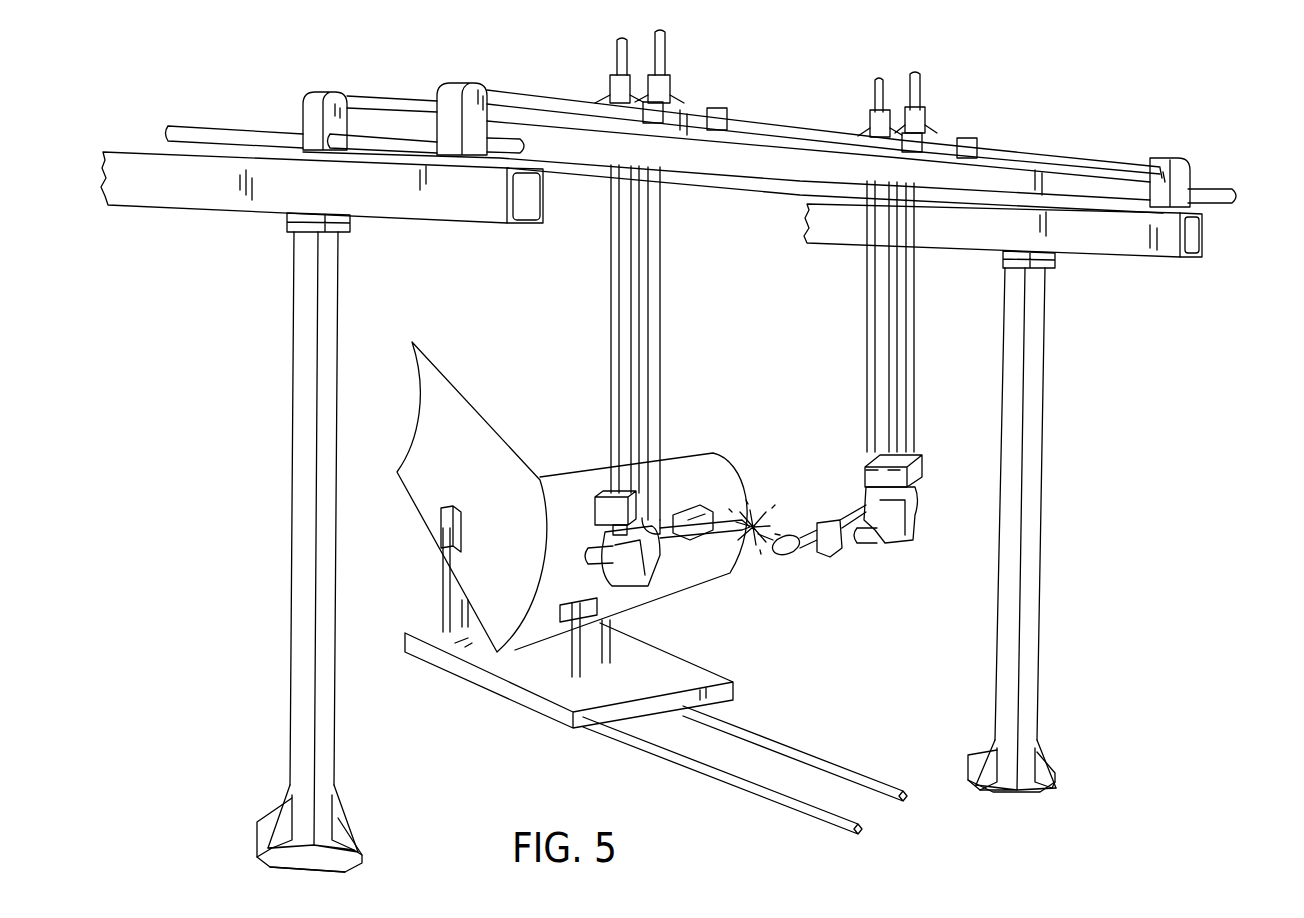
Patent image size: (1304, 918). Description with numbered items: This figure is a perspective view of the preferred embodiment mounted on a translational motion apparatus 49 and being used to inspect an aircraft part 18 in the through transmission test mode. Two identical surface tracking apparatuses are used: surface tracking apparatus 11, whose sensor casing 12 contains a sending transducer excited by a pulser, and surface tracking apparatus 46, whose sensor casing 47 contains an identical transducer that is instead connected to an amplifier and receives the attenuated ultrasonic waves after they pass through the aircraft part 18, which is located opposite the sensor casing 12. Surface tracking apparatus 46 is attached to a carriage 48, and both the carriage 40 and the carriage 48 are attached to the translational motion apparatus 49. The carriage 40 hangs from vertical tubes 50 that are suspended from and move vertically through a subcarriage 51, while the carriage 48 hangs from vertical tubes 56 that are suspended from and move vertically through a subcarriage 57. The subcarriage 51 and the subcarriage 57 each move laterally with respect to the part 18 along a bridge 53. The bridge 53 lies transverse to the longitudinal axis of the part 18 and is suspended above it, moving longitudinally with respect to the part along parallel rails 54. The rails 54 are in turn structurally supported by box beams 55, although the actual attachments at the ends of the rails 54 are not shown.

The surface tracking apparatus 11 is at (670, 578).
The sensor casing 12 is at (720, 512).
The aircraft part 18 is at (487, 421).
The carriage 40 is at (607, 532).
The surface tracking apparatus 46 is at (900, 538).
The sensor casing 47 is at (781, 548).
The carriage 48 is at (918, 487).
The translational motion apparatus 49 is at (1062, 142).
The vertical tubes 50 is at (662, 291).
The subcarriage 51 is at (673, 83).
The bridge 53 is at (470, 89).
The parallel rails 54 is at (265, 130).
The box beams 55 is at (242, 200).
The vertical tubes 56 is at (918, 308).
The subcarriage 57 is at (926, 114).